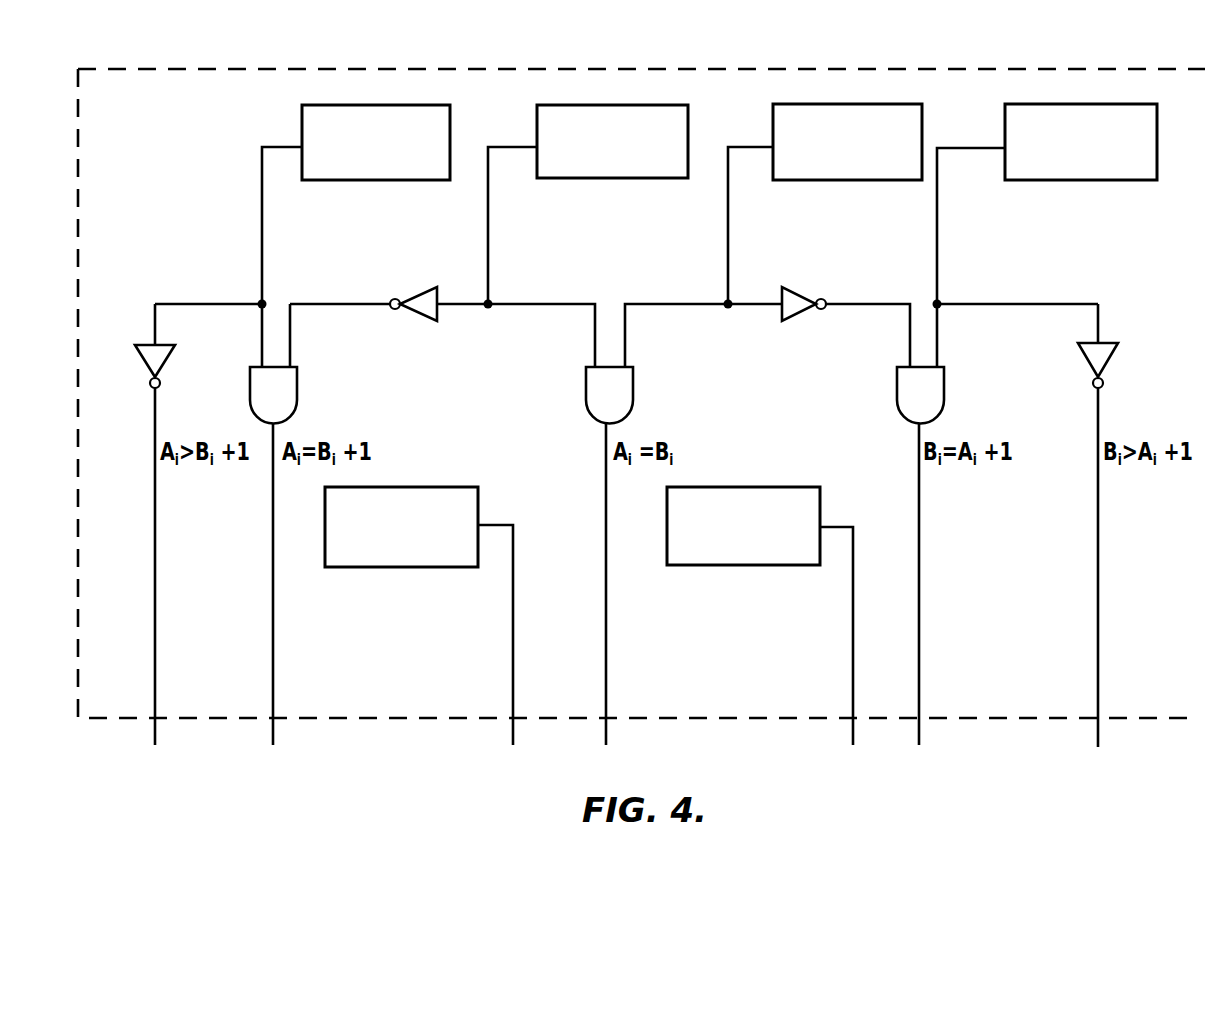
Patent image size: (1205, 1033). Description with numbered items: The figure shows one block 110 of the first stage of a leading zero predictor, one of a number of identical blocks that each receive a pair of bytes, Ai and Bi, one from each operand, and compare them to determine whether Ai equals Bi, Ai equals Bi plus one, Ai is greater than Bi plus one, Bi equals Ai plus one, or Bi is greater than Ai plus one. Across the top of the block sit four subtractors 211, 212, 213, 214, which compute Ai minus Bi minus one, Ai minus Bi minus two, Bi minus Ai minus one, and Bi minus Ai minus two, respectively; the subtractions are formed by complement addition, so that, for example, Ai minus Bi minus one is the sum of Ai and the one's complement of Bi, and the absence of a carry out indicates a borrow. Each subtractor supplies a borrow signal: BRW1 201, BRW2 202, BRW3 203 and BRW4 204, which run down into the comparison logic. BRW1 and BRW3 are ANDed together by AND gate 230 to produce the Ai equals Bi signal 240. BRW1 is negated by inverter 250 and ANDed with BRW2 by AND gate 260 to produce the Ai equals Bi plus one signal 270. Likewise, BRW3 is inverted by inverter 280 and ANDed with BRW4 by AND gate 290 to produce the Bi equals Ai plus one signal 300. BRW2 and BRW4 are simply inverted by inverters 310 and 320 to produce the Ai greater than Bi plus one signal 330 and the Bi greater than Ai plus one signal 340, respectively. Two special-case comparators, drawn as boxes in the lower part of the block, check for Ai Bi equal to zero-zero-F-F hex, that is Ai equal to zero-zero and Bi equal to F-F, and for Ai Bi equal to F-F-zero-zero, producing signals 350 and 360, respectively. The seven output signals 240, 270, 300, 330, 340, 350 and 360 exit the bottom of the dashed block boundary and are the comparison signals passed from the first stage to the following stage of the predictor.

The block of the first stage 110 is at (526, 52).
The borrow signal BRW1 201 is at (489, 247).
The borrow signal BRW2 202 is at (263, 247).
The borrow signal BRW3 203 is at (729, 247).
The borrow signal BRW4 204 is at (938, 247).
The subtractor 211 is at (642, 104).
The subtractor 212 is at (402, 104).
The subtractor 213 is at (879, 104).
The subtractor 214 is at (1119, 104).
The AND gate 230 is at (633, 392).
The Ai = Bi signal 240 is at (606, 657).
The inverter 250 is at (426, 291).
The AND gate 260 is at (298, 392).
The Ai = Bi + 1 signal 270 is at (273, 657).
The inverter 280 is at (800, 291).
The AND gate 290 is at (945, 392).
The Bi = Ai + 1 signal 300 is at (919, 657).
The inverter 310 is at (167, 362).
The inverter 320 is at (1111, 355).
The Ai Bi + 1 signal 330 is at (155, 657).
The Bi Ai + 1 signal 340 is at (1098, 657).
The AiBi = 00FF signal 350 is at (513, 657).
The AiBi = FF00 signal 360 is at (853, 657).